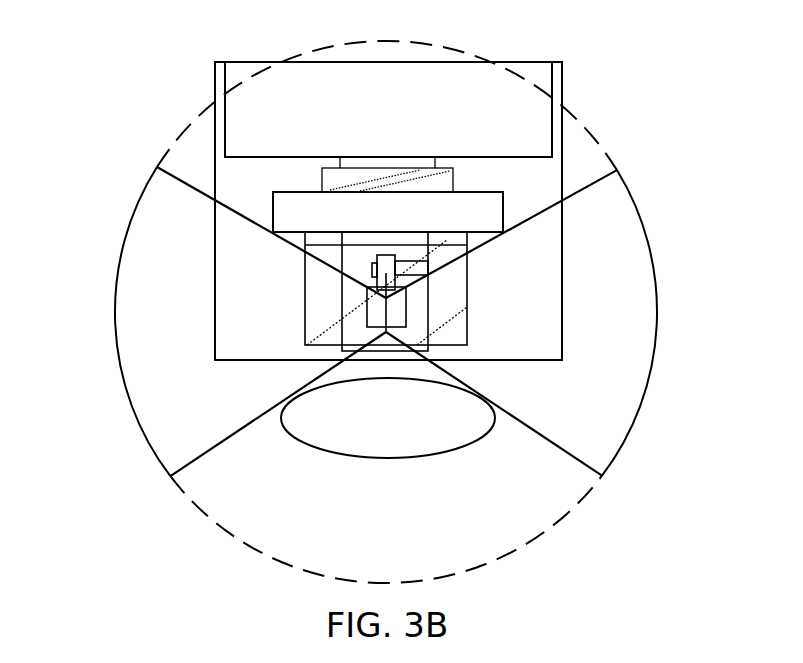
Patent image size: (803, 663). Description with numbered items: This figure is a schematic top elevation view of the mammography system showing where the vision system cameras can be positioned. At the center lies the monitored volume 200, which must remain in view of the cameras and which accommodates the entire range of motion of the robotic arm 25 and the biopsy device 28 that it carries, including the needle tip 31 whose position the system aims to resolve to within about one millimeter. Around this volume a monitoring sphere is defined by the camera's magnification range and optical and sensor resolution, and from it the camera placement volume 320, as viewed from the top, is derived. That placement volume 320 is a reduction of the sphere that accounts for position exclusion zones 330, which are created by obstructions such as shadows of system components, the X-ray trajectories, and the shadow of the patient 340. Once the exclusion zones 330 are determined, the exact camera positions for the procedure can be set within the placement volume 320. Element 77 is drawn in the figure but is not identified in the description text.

The robotic arm 25 is at (412, 242).
The biopsy device 28 is at (372, 263).
The needle tip 31 is at (392, 332).
The outer housing block 77 is at (345, 308).
The monitored volume 200 is at (342, 301).
The camera placement volume 320 is at (636, 200).
The position exclusion zones 330 is at (190, 143).
The patient 340 is at (382, 460).